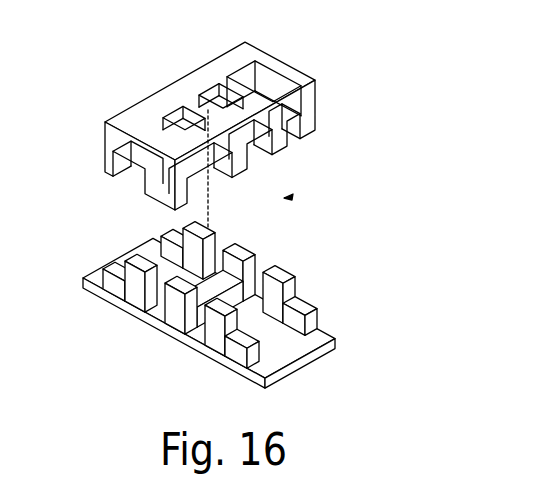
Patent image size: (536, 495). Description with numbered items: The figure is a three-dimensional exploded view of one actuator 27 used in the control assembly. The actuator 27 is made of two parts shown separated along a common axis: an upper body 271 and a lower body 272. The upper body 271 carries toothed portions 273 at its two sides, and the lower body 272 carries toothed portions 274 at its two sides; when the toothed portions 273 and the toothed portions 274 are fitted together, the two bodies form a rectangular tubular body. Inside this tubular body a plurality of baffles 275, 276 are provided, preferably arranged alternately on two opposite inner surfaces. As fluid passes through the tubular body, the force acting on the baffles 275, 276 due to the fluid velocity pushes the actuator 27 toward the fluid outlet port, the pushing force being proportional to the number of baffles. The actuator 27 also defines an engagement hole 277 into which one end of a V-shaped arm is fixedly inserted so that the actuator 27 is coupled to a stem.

The actuator 27 is at (209, 208).
The upper body 271 is at (173, 97).
The lower body 272 is at (208, 341).
The toothed portions 273 is at (120, 176).
The toothed portions 274 is at (280, 273).
The baffle 275 is at (278, 88).
The baffle 276 is at (228, 290).
The engagement hole 277 is at (146, 318).